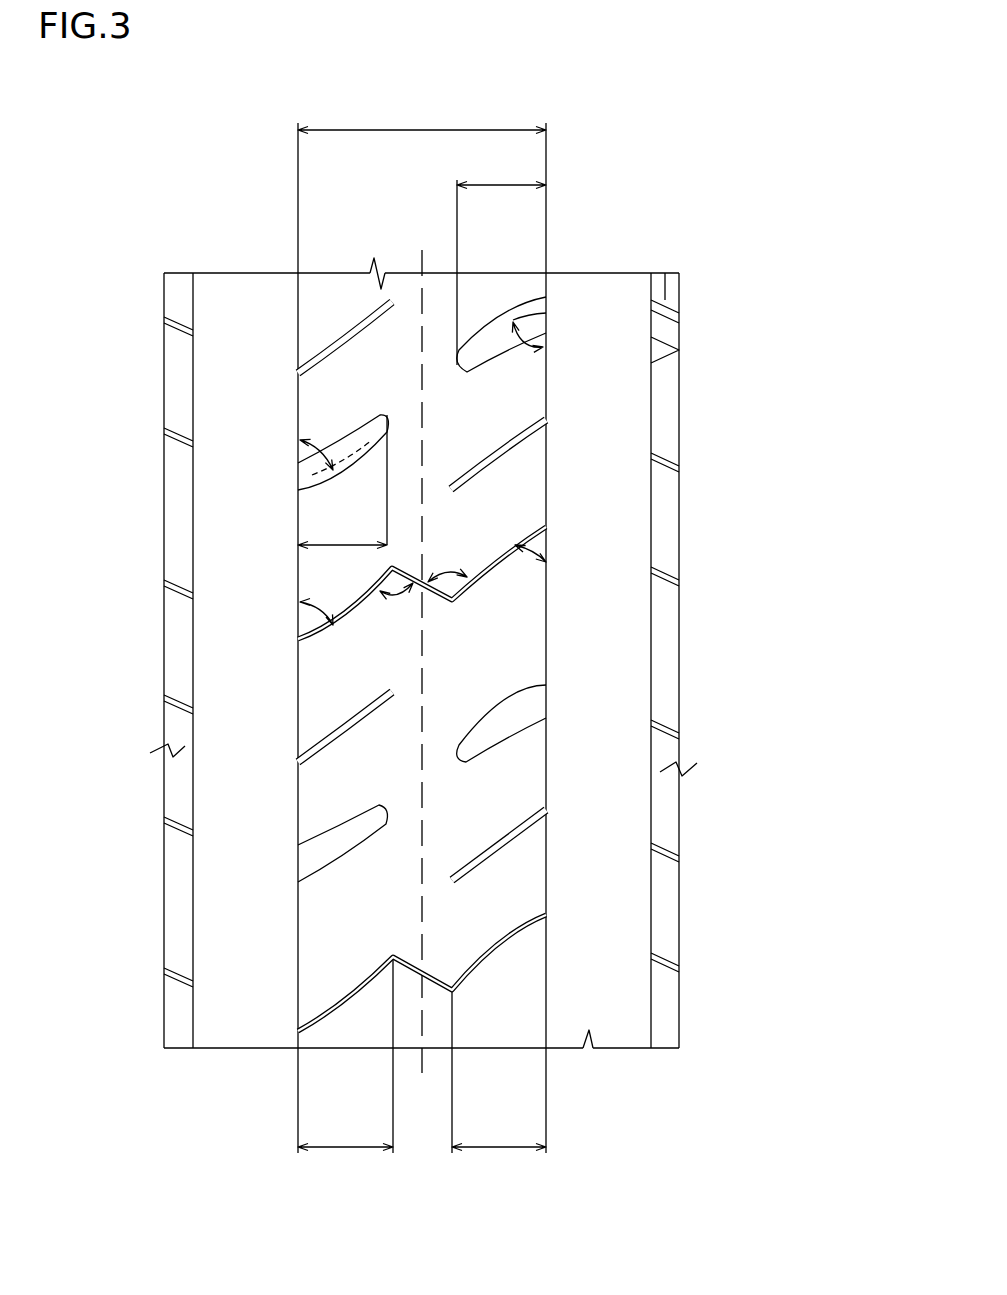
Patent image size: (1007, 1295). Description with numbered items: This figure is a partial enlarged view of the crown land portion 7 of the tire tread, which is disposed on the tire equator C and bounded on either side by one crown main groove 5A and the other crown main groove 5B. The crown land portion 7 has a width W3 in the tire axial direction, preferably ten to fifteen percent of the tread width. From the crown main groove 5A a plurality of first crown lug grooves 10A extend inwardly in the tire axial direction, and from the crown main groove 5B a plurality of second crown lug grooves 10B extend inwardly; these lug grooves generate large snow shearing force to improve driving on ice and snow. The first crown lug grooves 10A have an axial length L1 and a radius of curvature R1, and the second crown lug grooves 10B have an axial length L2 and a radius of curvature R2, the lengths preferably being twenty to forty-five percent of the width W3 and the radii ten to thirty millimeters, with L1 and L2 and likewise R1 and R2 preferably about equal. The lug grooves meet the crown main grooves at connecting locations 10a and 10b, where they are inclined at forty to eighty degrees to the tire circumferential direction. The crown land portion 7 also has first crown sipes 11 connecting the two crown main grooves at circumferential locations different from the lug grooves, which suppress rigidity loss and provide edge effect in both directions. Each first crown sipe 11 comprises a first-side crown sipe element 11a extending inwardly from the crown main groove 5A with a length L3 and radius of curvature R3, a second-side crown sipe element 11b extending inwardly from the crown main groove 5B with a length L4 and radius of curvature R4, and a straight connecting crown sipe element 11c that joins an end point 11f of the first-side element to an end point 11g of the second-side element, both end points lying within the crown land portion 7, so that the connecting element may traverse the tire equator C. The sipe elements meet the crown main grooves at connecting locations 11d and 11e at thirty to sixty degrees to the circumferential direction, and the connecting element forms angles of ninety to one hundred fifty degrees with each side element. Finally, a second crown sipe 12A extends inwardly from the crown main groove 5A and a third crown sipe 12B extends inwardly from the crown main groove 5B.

The crown main groove 5A is at (242, 303).
The crown main groove 5B is at (590, 298).
The crown land portion 7 is at (343, 303).
The tire equator C is at (421, 648).
The width of the crown land portion W3 is at (422, 116).
The length of the first crown lug grooves L1 is at (330, 530).
The length of the second crown lug grooves L2 is at (501, 170).
The length of the first-side crown sipe element L3 is at (345, 1162).
The length of the second-side crown sipe element L4 is at (499, 1162).
The first crown lug grooves 10A is at (330, 482).
The connecting locations 10a is at (330, 477).
The second crown lug grooves 10B is at (537, 303).
The connecting locations 10b is at (513, 320).
The first crown sipes 11 is at (72, 850).
The first-side crown sipe element 11a is at (372, 963).
The second-side crown sipe element 11b is at (510, 927).
The connecting crown sipe element 11c is at (397, 955).
The connecting locations 11d is at (298, 640).
The connecting locations 11e is at (513, 541).
The end point 11f is at (394, 960).
The end point 11g is at (455, 992).
The second crown sipe 12A is at (343, 740).
The third crown sipe 12B is at (508, 834).
The radius of curvature of the first crown lug grooves R1 is at (343, 446).
The radius of curvature of the second crown lug grooves R2 is at (498, 343).
The radius of curvature of the first-side crown sipe element R3 is at (348, 992).
The radius of curvature of the second-side crown sipe element R4 is at (498, 957).